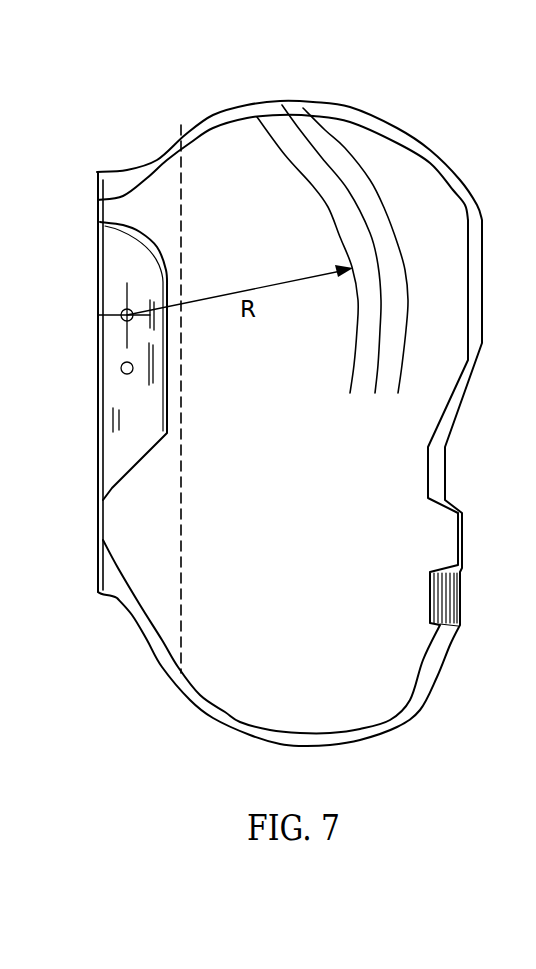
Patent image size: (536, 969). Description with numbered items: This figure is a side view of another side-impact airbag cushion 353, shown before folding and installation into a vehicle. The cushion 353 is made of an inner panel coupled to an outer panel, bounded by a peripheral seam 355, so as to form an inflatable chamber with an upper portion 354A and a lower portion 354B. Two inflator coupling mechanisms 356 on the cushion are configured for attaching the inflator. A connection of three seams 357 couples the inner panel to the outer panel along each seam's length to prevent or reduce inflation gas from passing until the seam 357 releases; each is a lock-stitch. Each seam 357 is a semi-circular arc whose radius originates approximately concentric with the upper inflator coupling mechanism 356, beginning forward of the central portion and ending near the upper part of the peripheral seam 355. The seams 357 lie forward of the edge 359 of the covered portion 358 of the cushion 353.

The side-impact airbag cushion 353 is at (141, 97).
The upper portion 354A is at (288, 244).
The lower portion 354B is at (348, 655).
The peripheral seam 355 is at (369, 128).
The inflator coupling mechanism 356 is at (121, 316).
The seam 357 is at (303, 110).
The covered portion 358 is at (122, 530).
The edge 359 is at (183, 550).